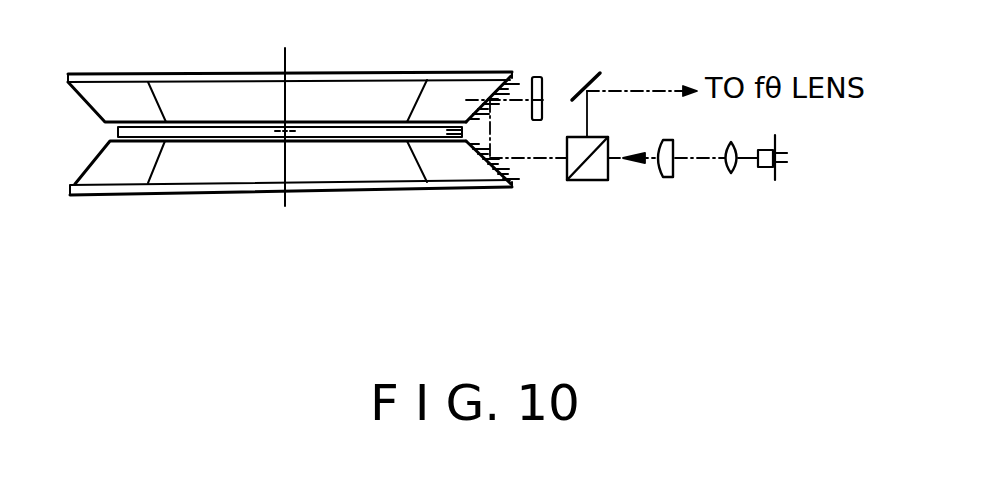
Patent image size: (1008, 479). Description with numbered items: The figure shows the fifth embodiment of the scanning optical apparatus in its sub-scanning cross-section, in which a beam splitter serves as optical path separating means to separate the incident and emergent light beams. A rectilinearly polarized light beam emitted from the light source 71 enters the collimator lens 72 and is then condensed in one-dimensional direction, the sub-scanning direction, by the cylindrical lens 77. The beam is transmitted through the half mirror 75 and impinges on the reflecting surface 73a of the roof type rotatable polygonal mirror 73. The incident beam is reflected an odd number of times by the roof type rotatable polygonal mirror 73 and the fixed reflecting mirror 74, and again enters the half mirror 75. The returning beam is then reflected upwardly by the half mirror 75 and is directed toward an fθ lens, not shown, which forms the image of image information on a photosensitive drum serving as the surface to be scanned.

The light source 71 is at (770, 168).
The collimator lens 72 is at (730, 175).
The roof type rotatable polygonal mirror 73 is at (443, 190).
The reflecting surface 73a is at (517, 190).
The fixed reflecting mirror 74 is at (546, 95).
The half mirror 75 is at (590, 182).
The cylindrical lens 77 is at (668, 180).